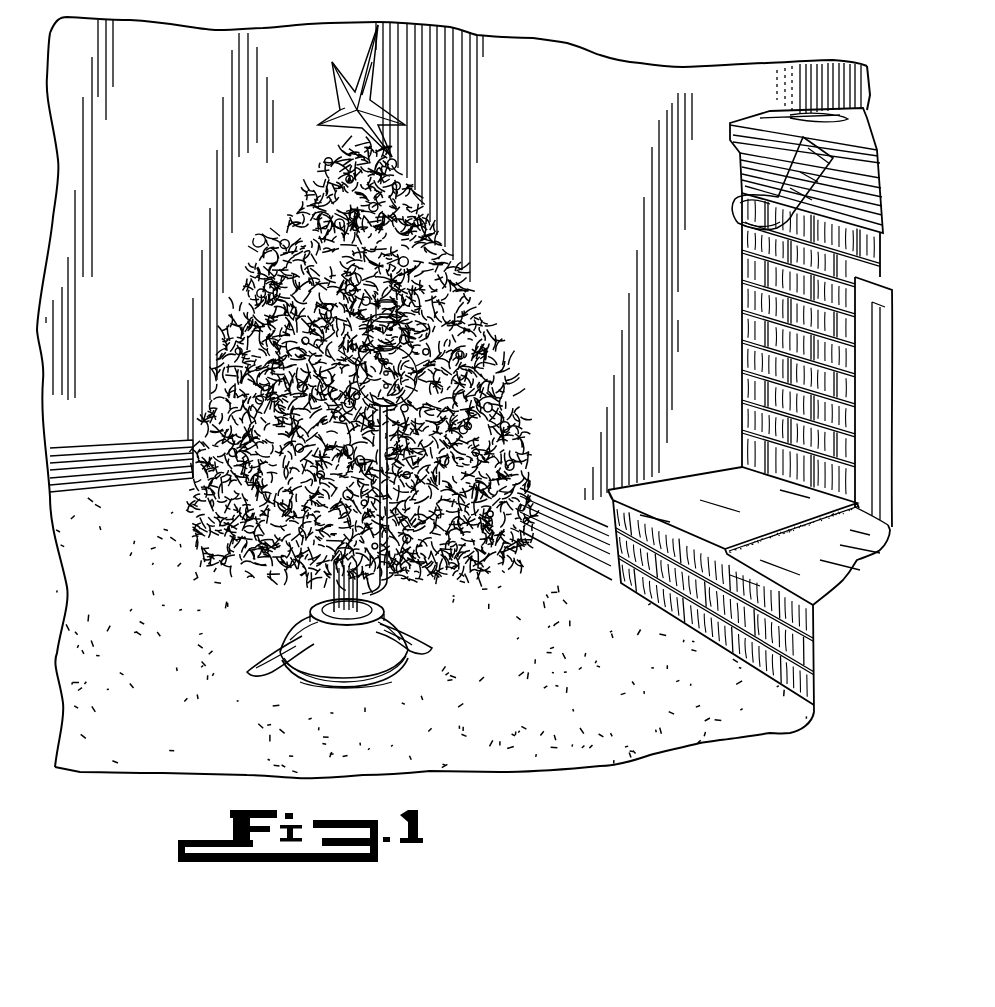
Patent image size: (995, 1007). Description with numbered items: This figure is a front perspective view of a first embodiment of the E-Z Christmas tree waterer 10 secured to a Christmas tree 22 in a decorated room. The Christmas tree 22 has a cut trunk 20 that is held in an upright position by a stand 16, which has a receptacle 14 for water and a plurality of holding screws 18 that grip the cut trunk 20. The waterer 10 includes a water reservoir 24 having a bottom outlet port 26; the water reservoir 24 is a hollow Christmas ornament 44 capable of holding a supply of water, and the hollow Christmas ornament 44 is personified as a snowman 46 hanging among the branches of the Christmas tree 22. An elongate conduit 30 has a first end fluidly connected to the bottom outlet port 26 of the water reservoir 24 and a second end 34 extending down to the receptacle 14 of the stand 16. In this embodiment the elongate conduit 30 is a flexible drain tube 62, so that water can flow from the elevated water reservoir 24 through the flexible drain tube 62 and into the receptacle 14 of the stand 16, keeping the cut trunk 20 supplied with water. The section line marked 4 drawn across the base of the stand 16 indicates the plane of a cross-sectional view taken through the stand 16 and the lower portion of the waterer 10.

The section line 4- 4 is at (160, 635).
The E-Z Christmas tree waterer 10 is at (470, 320).
The receptacle 14 is at (322, 600).
The stand 16 is at (360, 680).
The holding screws 18 is at (344, 642).
The cut trunk 20 is at (330, 575).
The Christmas tree 22 is at (262, 240).
The water reservoir 24 is at (348, 280).
The bottom outlet port 26 is at (392, 448).
The elongate conduit 30 is at (378, 486).
The second end 34 is at (408, 654).
The hollow Christmas ornament 44 is at (270, 387).
The snowman 46 is at (382, 311).
The flexible drain tube 62 is at (362, 678).